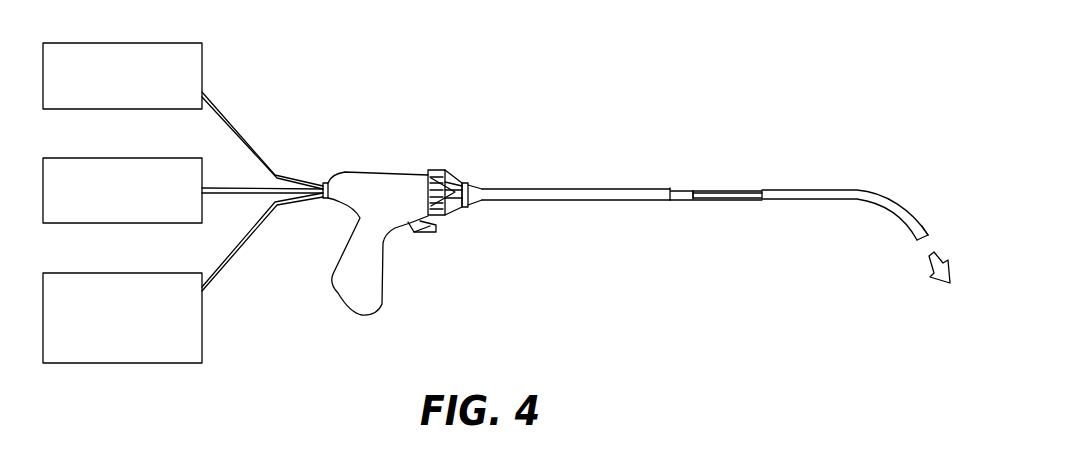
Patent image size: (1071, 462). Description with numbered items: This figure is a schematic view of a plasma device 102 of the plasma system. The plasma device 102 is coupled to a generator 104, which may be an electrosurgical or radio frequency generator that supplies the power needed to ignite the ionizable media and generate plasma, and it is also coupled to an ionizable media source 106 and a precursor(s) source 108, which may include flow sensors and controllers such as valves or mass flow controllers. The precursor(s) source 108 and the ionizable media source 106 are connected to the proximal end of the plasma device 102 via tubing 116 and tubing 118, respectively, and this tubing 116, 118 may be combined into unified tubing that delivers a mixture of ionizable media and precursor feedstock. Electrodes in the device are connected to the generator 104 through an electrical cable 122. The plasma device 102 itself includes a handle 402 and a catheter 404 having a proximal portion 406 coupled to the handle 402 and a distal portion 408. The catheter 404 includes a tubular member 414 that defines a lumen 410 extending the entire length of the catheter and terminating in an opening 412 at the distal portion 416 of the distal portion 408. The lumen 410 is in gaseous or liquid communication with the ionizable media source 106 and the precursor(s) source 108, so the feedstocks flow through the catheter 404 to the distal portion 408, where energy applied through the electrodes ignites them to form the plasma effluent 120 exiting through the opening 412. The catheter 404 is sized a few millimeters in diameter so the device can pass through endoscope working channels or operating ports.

The plasma device 102 is at (760, 105).
The generator 104 is at (80, 158).
The ionizable media source 106 is at (80, 273).
The precursor(s) source 108 is at (80, 43).
The tubing 116 is at (228, 118).
The tubing 118 is at (232, 268).
The plasma effluent 120 is at (928, 272).
The electrical cable 122 is at (237, 187).
The handle 402 is at (392, 174).
The catheter 404 is at (678, 163).
The proximal portion 406 is at (578, 188).
The distal portion 408 is at (807, 190).
The lumen 410 is at (741, 190).
The opening 412 is at (925, 246).
The tubular member 414 is at (716, 201).
The distal portion 416 is at (933, 229).